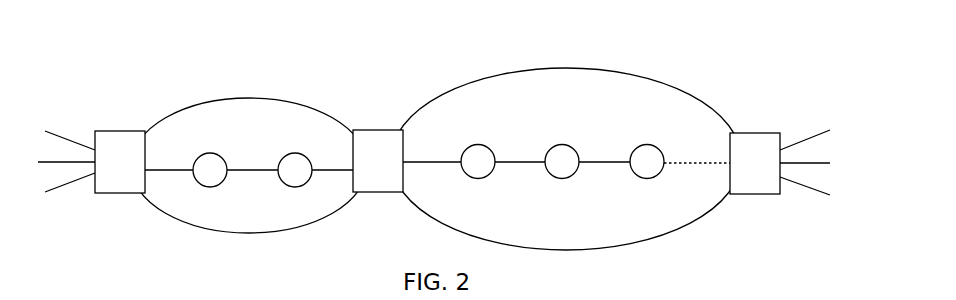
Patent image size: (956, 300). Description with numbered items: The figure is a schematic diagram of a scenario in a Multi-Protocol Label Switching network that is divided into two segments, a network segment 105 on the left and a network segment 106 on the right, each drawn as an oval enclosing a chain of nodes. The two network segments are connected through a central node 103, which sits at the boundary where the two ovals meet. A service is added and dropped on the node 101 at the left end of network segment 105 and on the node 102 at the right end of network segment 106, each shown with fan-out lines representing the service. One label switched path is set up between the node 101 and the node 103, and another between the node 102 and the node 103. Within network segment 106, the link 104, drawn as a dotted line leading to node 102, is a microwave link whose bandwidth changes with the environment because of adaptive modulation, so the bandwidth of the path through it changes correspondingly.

The node 101 is at (119, 131).
The node 102 is at (763, 133).
The node 103 is at (383, 130).
The link 104 is at (681, 164).
The network segment 105 is at (230, 98).
The network segment 106 is at (597, 68).